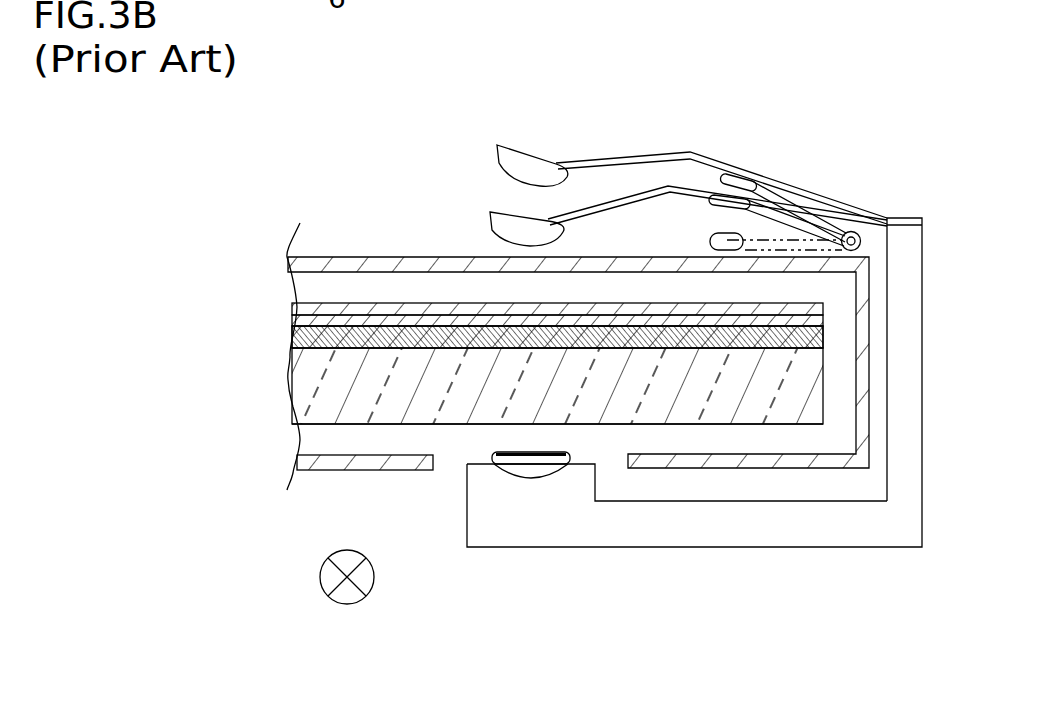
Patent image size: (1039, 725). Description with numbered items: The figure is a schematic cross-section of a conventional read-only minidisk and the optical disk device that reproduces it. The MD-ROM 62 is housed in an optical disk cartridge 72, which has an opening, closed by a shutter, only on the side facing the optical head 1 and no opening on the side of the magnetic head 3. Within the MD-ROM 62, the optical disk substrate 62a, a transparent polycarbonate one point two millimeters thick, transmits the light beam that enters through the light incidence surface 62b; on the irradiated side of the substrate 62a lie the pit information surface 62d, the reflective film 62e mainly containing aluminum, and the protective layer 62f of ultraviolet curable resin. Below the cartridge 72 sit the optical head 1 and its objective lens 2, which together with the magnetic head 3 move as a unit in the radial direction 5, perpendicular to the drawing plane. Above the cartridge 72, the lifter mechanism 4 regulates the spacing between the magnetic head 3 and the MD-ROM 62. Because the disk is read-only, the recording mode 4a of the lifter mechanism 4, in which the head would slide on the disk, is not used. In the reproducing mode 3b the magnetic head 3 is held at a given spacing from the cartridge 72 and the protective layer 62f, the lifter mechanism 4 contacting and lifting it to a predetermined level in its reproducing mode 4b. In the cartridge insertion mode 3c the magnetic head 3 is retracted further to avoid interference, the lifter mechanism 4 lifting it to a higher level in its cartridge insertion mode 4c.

The optical head 1 is at (590, 530).
The objective lens 2 is at (527, 470).
The magnetic head 3 is at (360, 127).
The reproducing mode 3b is at (492, 222).
The cartridge insertion mode 3c is at (497, 163).
The lifter mechanism 4 is at (708, 60).
The recording mode 4a is at (712, 240).
The reproducing mode 4b is at (713, 198).
The cartridge insertion mode 4c is at (723, 175).
The radial direction 5 is at (348, 604).
The MD-ROM 62 is at (149, 247).
The optical disk substrate 62a is at (313, 385).
The light incidence surface 62b is at (357, 426).
The pit information surface 62d is at (297, 350).
The reflective film 62e is at (297, 322).
The protective layer 62f is at (293, 303).
The optical disk cartridge 72 is at (313, 258).